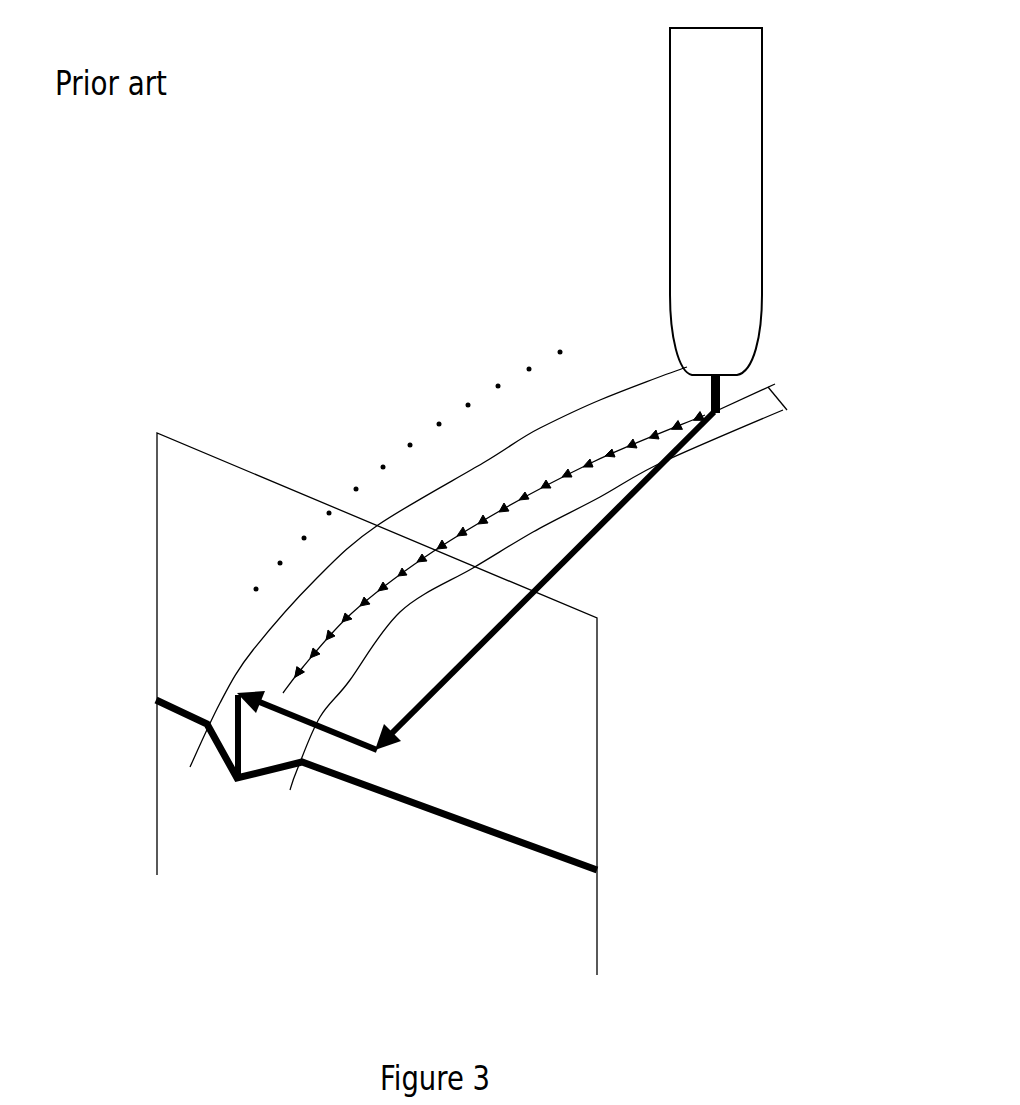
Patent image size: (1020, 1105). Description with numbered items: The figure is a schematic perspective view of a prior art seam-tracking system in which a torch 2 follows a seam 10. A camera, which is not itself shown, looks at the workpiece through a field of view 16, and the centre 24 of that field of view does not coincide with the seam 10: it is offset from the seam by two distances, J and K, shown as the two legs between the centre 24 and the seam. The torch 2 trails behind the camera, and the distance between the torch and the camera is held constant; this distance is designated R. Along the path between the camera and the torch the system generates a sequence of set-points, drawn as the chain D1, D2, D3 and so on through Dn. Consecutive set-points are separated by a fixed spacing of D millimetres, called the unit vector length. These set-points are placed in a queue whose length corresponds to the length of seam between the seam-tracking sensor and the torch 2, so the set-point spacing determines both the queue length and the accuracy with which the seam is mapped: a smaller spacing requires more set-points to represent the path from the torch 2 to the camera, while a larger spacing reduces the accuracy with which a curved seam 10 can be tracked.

The torch 2 is at (727, 182).
The seam 10 is at (776, 396).
The field of view 16 is at (225, 458).
The centre 24 is at (377, 755).
The offset distance K is at (237, 723).
The offset distance J is at (303, 720).
The torch-to-camera distance R is at (544, 581).
The first set-point D1 is at (654, 330).
The second set-point D2 is at (621, 333).
The third set-point D3 is at (594, 335).
The nth set-point Dn is at (237, 600).